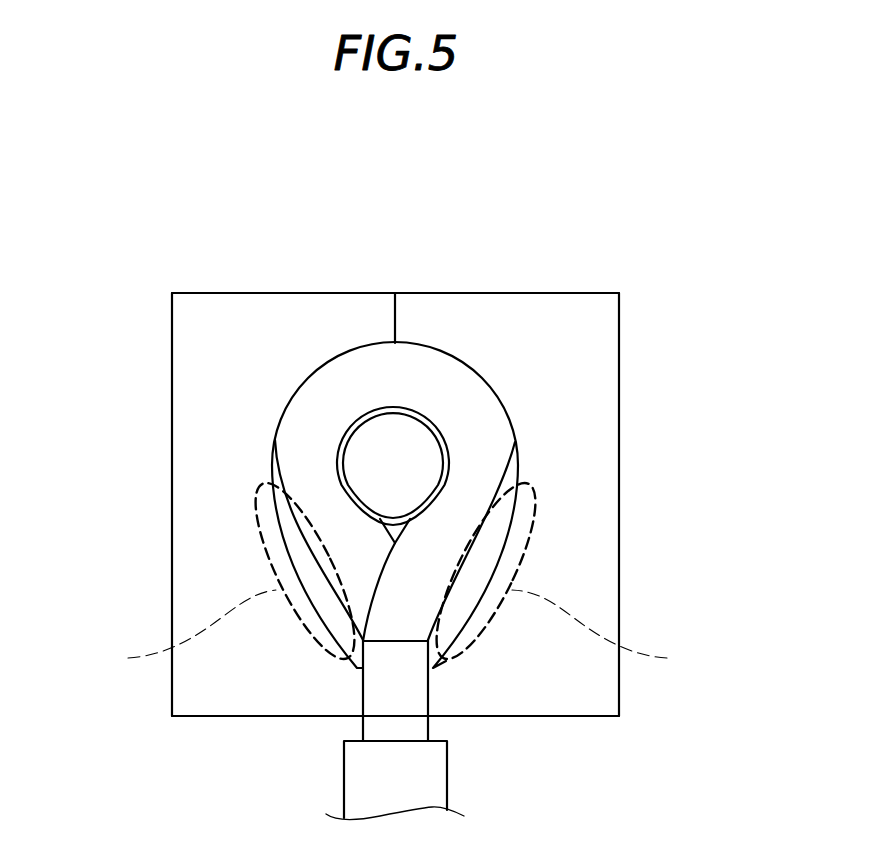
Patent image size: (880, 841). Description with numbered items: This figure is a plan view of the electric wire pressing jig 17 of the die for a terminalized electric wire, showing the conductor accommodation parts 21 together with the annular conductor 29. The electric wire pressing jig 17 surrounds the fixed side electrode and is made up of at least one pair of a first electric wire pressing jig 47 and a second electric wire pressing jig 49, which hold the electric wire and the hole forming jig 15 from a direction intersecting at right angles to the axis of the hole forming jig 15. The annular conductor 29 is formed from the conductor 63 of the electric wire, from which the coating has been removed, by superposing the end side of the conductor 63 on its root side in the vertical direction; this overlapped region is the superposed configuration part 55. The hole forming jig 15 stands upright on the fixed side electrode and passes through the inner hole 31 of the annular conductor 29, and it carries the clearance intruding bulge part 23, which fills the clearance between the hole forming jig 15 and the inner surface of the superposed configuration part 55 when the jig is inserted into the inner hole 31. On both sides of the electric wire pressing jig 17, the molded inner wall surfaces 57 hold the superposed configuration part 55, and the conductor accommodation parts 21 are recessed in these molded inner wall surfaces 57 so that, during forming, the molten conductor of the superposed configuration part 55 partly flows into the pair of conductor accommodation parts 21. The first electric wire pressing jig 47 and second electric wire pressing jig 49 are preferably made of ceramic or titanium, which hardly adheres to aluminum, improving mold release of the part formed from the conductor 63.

The hole forming jig 15 is at (444, 424).
The electric wire pressing jig 17 is at (502, 290).
The conductor accommodation part 21 is at (395, 630).
The clearance intruding bulge part 23 is at (400, 503).
The annular conductor 29 is at (440, 347).
The inner hole 31 is at (382, 411).
The first electric wire pressing jig 47 is at (583, 430).
The second electric wire pressing jig 49 is at (208, 385).
The superposed configuration part 55 is at (392, 612).
The molded inner wall surface 57 is at (309, 594).
The conductor 63 is at (365, 364).